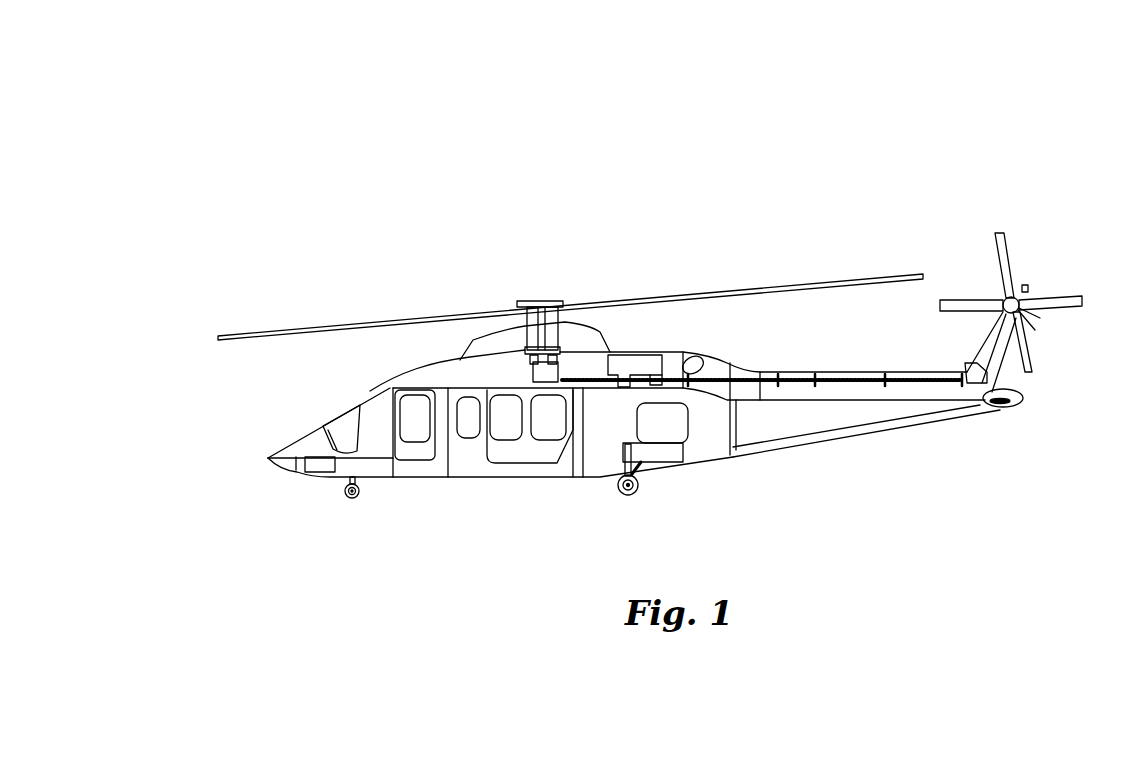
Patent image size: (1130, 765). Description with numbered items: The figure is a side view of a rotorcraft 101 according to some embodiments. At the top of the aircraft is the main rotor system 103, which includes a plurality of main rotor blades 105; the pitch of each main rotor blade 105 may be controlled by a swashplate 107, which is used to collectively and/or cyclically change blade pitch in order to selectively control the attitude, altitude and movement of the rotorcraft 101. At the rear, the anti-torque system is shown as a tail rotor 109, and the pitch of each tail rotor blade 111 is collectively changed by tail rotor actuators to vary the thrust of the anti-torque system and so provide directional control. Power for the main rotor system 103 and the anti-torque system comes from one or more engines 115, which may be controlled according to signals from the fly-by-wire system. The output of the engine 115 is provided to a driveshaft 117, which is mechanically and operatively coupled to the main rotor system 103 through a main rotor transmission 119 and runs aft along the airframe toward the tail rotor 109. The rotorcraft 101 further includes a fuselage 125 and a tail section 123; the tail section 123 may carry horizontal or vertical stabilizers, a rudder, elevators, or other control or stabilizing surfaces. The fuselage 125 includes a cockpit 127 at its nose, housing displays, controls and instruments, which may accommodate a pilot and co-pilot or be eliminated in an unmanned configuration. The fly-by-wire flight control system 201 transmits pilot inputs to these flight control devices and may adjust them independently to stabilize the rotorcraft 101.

The rotorcraft 101 is at (363, 81).
The main rotor system 103 is at (558, 286).
The main rotor blades 105 is at (808, 277).
The swashplate 107 is at (559, 350).
The tail rotor 109 is at (1017, 212).
The tail rotor blades 111 is at (1074, 298).
The engines 115 is at (649, 354).
The driveshaft 117 is at (584, 384).
The main rotor transmission 119 is at (532, 374).
The tail section 123 is at (850, 440).
The fuselage 125 is at (497, 479).
The cockpit 127 is at (332, 430).
The fly-by-wire flight control system 201 is at (303, 471).